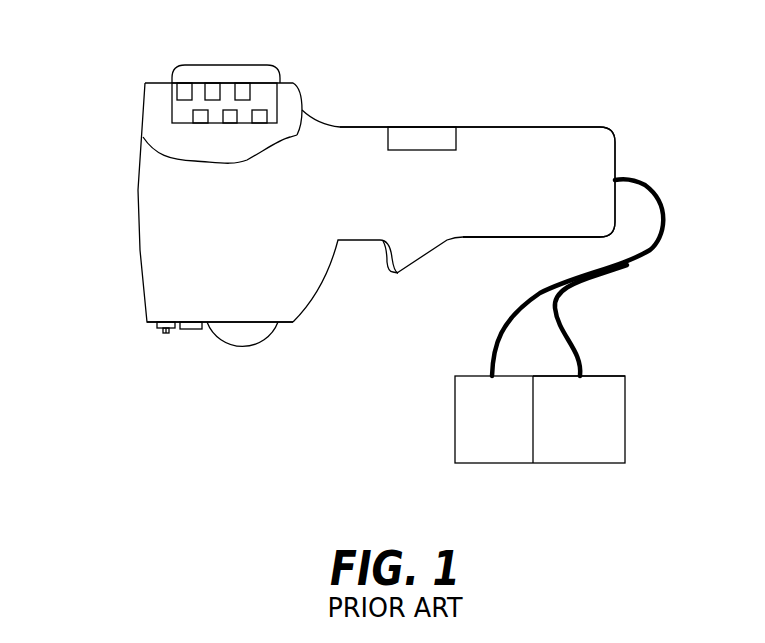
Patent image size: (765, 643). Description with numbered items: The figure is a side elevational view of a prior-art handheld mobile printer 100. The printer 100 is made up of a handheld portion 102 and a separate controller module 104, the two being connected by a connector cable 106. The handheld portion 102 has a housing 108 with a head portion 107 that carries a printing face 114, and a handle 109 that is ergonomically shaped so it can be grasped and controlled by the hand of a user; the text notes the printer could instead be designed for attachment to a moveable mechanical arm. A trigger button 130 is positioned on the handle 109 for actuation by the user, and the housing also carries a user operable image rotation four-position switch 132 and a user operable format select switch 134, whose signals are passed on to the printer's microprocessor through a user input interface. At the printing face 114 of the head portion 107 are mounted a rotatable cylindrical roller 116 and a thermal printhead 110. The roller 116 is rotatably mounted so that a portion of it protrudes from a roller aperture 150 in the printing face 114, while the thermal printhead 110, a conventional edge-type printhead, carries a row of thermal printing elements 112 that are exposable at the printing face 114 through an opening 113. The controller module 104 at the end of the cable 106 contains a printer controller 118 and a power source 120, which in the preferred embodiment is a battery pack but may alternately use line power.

The handheld mobile printer 100 is at (386, 264).
The handheld portion 102 is at (140, 190).
The controller module 104 is at (498, 446).
The connector cable 106 is at (657, 192).
The head portion 107 is at (153, 242).
The housing 108 is at (573, 126).
The handle 109 is at (499, 226).
The thermal printhead 110 is at (165, 333).
The thermal printing elements 112 is at (167, 334).
The opening 113 is at (157, 323).
The printing face 114 is at (293, 323).
The rotatable cylindrical roller 116 is at (249, 343).
The printer controller 118 is at (493, 453).
The power source 120 is at (583, 453).
The trigger button 130 is at (383, 265).
The image rotation four-position switch 132 is at (173, 88).
The format select switch 134 is at (213, 82).
The roller aperture 150 is at (205, 340).